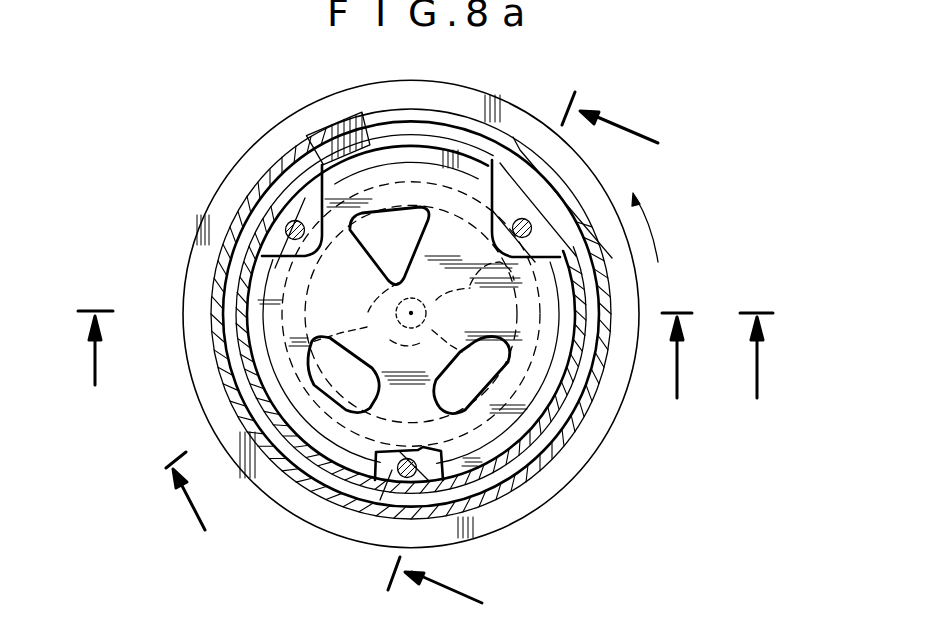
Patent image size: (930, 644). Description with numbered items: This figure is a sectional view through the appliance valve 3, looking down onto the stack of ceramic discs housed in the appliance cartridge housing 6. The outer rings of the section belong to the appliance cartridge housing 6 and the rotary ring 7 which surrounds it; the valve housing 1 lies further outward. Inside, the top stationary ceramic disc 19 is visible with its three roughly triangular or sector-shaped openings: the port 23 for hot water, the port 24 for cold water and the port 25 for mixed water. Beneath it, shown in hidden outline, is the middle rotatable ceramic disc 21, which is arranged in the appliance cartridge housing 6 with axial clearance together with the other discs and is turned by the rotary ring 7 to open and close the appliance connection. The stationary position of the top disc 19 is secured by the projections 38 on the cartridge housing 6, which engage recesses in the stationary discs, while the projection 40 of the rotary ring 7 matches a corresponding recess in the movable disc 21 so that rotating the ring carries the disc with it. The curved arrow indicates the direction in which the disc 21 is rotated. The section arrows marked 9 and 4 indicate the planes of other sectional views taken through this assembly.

The appliance cartridge housing 6 is at (337, 470).
The rotary ring 7 is at (523, 388).
The top stationary ceramic disc 19 is at (290, 288).
The middle rotatable ceramic disc 21 is at (300, 196).
The port for hot water 23 is at (318, 364).
The port for cold water 24 is at (472, 397).
The port for mixed water 25 is at (397, 230).
The projection 38 is at (392, 470).
The projection of rotary ring 40 is at (332, 140).
The valve housing 1 is at (677, 373).
The appliance valve 3 is at (425, 372).
The section line 4 is at (194, 504).
The section line 9 is at (535, 359).